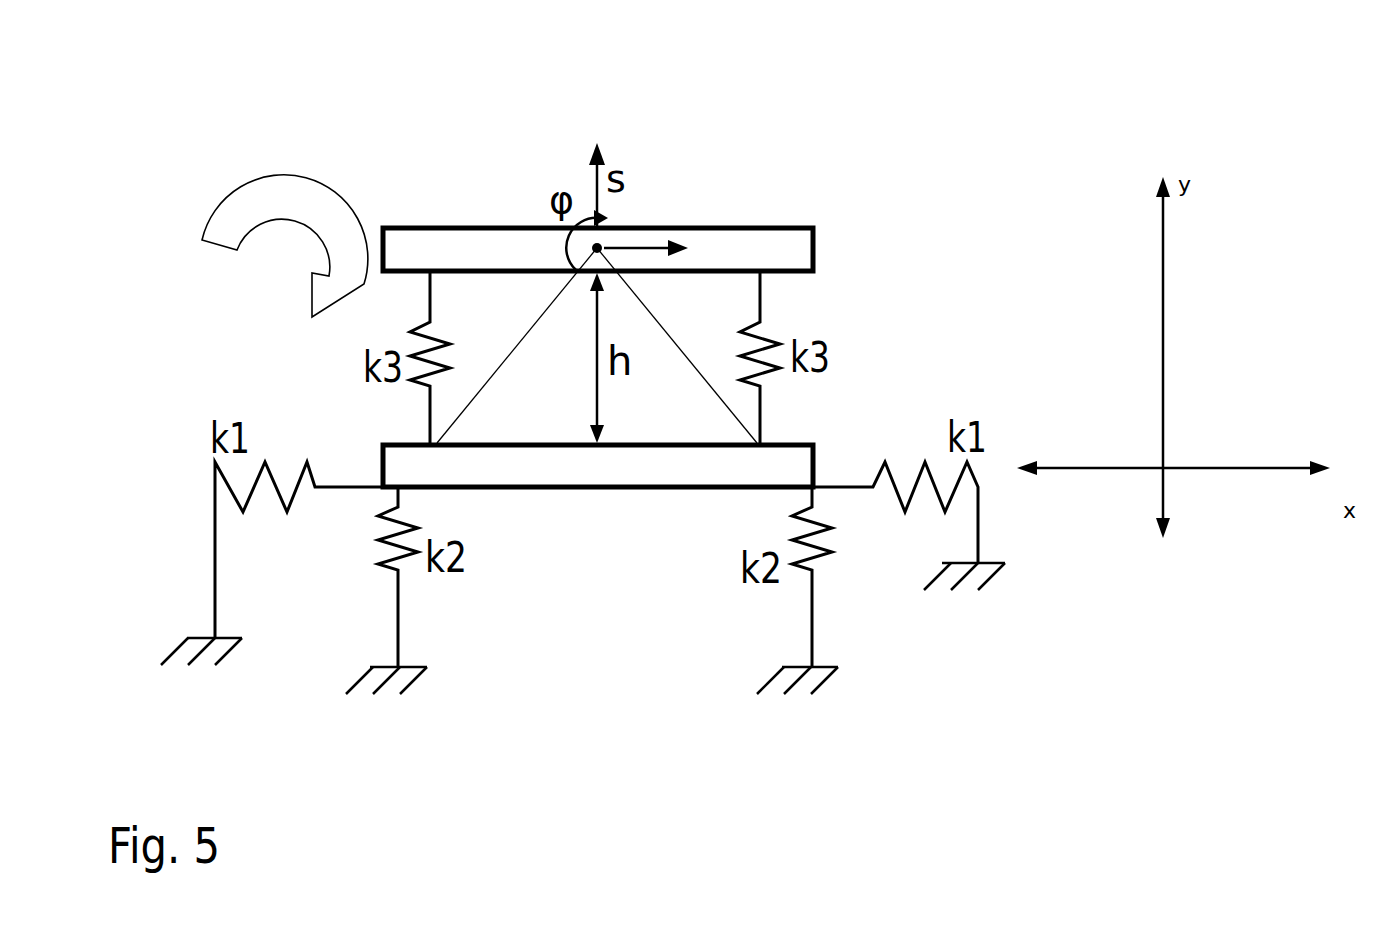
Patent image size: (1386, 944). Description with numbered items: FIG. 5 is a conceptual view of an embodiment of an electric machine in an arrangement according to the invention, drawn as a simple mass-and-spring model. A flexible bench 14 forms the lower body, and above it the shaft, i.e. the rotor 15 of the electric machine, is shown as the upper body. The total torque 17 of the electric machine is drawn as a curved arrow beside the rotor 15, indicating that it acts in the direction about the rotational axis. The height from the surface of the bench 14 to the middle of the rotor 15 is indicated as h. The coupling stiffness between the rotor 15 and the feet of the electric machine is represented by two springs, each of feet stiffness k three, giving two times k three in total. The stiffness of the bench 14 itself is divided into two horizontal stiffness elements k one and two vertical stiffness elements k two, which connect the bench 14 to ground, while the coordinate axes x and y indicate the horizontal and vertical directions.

The flexible bench 14 is at (705, 263).
The shaft (rotor) of the electric machine 15 is at (752, 250).
The total torque of the electric machine 17 is at (292, 203).